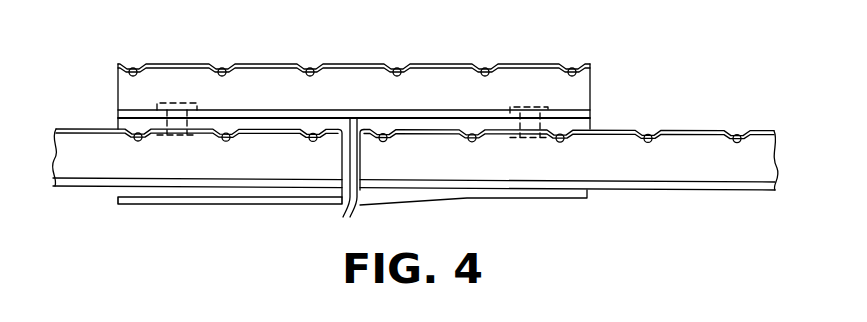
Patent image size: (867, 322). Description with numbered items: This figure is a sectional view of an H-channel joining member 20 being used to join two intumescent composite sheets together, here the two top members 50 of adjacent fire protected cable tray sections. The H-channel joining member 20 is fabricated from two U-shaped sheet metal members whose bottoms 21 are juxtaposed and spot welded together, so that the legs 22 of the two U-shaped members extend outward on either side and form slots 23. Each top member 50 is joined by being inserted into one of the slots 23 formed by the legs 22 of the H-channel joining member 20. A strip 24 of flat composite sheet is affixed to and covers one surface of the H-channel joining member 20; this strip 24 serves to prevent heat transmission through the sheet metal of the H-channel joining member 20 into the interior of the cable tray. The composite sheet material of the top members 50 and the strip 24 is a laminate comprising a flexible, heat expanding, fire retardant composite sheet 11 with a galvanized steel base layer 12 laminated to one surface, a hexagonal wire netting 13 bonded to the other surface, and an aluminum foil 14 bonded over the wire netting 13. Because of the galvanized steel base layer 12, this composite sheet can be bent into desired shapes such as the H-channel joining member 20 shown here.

The fire retardant composite sheet 11 is at (97, 150).
The galvanized steel base layer 12 is at (583, 118).
The hexagonal wire netting 13 is at (312, 68).
The aluminum foil 14 is at (271, 64).
The H-channel joining member 20 is at (327, 190).
The bottoms 21 is at (346, 214).
The legs 22 is at (207, 122).
The slots 23 is at (121, 194).
The strip 24 is at (498, 53).
The top member 50 is at (415, 138).